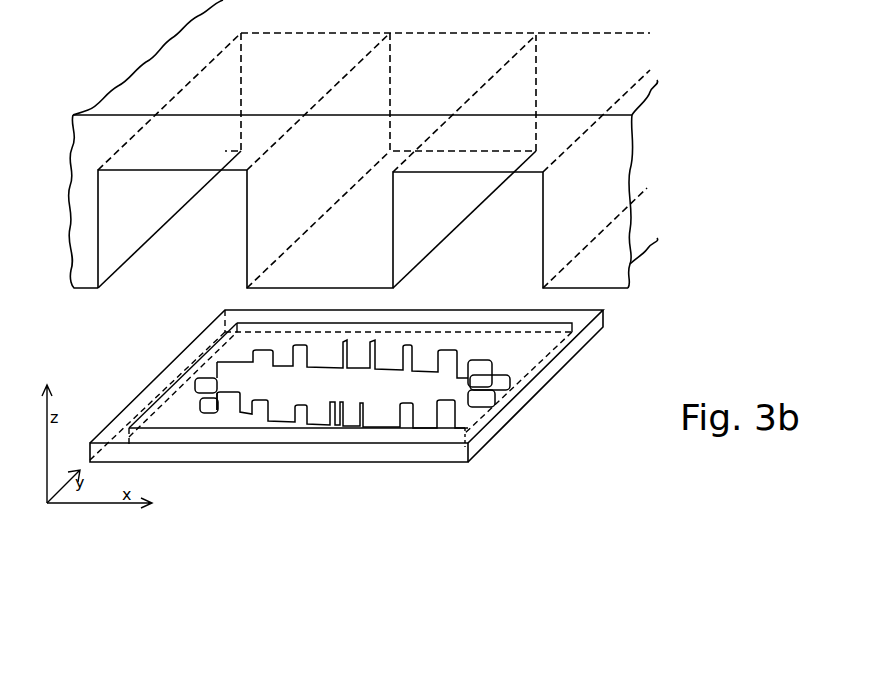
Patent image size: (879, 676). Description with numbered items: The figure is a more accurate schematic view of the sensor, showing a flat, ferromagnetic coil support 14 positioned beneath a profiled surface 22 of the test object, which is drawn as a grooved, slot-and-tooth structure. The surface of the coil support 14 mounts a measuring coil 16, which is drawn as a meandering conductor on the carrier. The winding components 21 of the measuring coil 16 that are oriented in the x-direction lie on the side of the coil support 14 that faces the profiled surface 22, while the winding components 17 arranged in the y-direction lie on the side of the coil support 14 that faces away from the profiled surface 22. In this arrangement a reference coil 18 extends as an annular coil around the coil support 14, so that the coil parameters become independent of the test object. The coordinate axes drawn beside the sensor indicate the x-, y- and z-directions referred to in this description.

The coil support 14 is at (278, 452).
The measuring coil 16 is at (463, 433).
The winding components 17 is at (175, 398).
The reference coil 18 is at (503, 378).
The winding components 21 is at (325, 428).
The profiled surface 22 is at (395, 213).